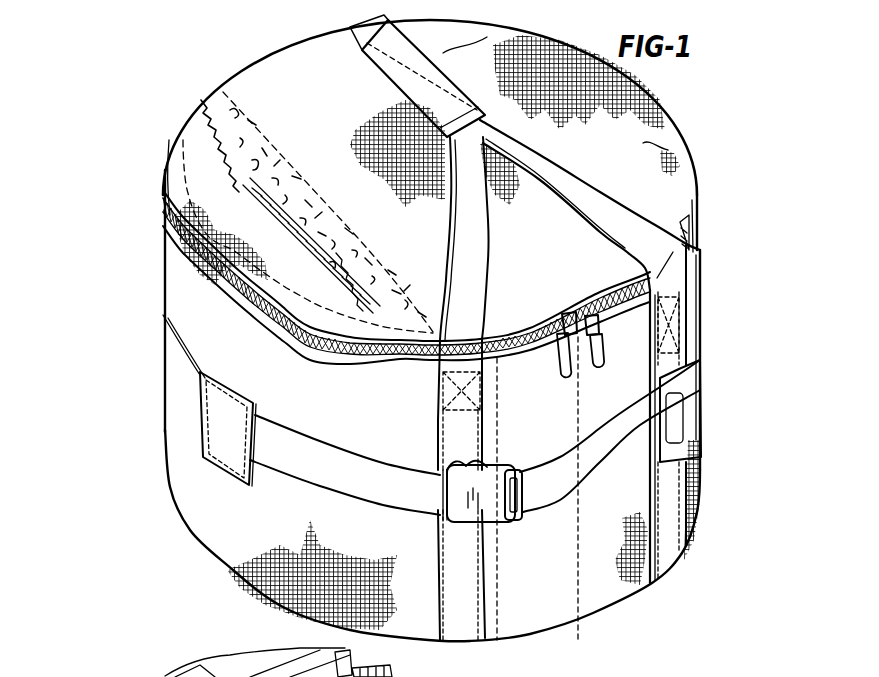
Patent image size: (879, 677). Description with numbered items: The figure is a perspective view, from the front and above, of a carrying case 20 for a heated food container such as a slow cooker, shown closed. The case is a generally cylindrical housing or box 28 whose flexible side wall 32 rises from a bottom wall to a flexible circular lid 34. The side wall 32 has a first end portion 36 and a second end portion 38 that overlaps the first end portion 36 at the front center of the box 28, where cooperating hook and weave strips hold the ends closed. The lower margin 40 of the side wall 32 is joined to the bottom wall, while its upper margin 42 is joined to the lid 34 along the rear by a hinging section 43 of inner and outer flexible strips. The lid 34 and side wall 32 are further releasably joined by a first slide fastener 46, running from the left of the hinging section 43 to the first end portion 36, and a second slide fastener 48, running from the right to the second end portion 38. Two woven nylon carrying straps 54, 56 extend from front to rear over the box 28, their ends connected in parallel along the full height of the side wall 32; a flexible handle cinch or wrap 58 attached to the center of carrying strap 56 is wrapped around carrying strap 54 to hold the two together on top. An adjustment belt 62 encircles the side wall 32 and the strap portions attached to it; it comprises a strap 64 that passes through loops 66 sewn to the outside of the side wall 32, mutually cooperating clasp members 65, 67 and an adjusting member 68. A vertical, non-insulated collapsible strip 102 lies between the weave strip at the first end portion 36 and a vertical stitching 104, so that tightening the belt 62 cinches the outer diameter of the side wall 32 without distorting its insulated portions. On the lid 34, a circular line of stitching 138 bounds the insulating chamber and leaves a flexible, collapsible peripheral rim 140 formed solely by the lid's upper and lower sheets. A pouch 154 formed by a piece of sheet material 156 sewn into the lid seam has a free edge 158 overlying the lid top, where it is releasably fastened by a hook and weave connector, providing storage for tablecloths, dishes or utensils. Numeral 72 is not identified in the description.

The carrying case 20 is at (150, 233).
The housing or box 28 is at (701, 276).
The side wall 32 is at (183, 318).
The lid 34 is at (188, 146).
The first end portion 36 is at (544, 432).
The second end portion 38 is at (634, 413).
The lower margin 40 is at (595, 600).
The upper margin 42 is at (170, 270).
The hinging section 43 is at (181, 670).
The first slide fastener 46 is at (395, 350).
The second slide fastener 48 is at (631, 255).
The carrying strap 54 is at (565, 250).
The carrying strap 56 is at (448, 240).
The handle cinch or wrap 58 is at (408, 63).
The adjustment belt 62 is at (183, 385).
The strap 64 is at (290, 480).
The clasp member 65 is at (520, 497).
The loops 66 is at (215, 430).
The clasp member 67 is at (457, 513).
The adjusting member 68 is at (688, 426).
The interior component 72 is at (459, 663).
The collapsible strip 102 is at (530, 616).
The vertical stitching 104 is at (490, 578).
The circular line of stitching 138 is at (322, 300).
The collapsible strip or rim 140 is at (160, 164).
The pouch 154 is at (262, 102).
The piece of sheet material 156 is at (533, 73).
The free edge 158 is at (203, 98).